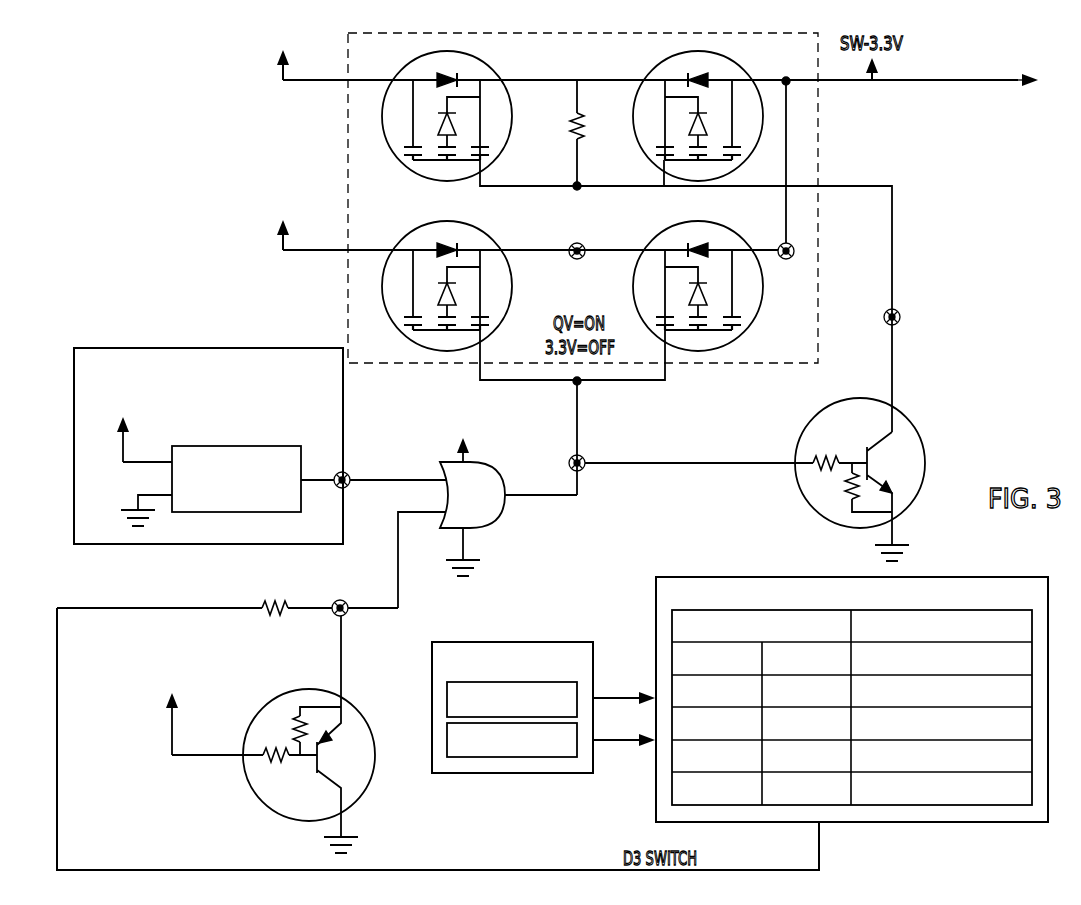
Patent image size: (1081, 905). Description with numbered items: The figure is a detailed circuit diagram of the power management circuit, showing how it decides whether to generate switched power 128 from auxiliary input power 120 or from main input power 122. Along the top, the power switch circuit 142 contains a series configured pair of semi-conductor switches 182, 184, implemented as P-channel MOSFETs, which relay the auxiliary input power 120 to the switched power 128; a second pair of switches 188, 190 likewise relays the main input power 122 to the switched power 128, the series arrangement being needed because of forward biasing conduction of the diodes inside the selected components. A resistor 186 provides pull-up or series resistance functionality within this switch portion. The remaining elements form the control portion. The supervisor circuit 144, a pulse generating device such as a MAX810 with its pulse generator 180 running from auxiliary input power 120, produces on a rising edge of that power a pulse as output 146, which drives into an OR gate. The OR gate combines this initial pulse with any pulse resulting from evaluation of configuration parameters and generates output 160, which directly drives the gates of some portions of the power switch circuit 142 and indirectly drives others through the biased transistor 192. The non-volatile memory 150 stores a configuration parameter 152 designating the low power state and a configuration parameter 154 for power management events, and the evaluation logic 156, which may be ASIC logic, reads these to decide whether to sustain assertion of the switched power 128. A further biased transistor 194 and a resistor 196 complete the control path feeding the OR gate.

The auxiliary input power 120 is at (318, 82).
The main input power 122 is at (318, 252).
The switched power 128 is at (935, 80).
The power switch circuit 142 is at (818, 138).
The supervisor circuit 144 is at (208, 425).
The output 146 is at (368, 477).
The non-volatile memory 150 is at (534, 705).
The configuration parameter 152 is at (447, 700).
The configuration parameter 154 is at (447, 742).
The evaluation logic 156 is at (697, 577).
The output 160 is at (553, 497).
The supervisor integrated circuit 180 is at (230, 446).
The semi-conductor switch 182 is at (415, 176).
The semi-conductor switch 184 is at (640, 142).
The resistor 186 is at (572, 135).
The switch 188 is at (493, 233).
The switch 190 is at (655, 233).
The biased transistor 192 is at (925, 447).
The biased transistor 194 is at (352, 707).
The resistor 196 is at (278, 600).